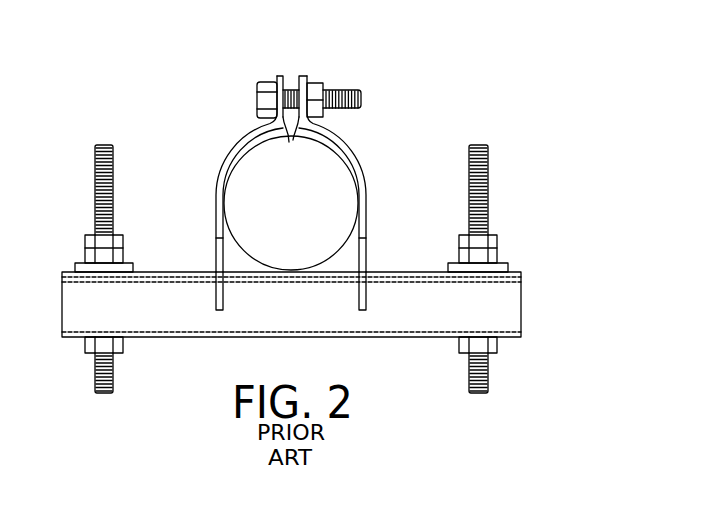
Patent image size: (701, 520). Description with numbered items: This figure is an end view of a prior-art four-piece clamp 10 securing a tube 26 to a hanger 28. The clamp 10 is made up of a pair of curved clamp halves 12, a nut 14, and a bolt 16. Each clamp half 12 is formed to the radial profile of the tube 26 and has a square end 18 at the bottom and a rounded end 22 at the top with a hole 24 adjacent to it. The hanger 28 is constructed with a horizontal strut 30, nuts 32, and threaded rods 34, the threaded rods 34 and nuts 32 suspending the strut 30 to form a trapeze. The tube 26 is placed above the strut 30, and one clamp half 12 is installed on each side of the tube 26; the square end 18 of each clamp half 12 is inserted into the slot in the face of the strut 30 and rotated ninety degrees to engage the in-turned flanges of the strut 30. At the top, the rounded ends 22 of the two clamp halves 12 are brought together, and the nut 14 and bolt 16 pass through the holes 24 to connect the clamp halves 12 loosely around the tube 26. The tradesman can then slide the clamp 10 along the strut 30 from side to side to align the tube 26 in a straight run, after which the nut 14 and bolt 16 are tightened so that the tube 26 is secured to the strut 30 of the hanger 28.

The four-piece clamp 10 is at (372, 72).
The clamp half 12 is at (240, 149).
The nut 14 is at (319, 112).
The bolt 16 is at (266, 84).
The square end 18 is at (213, 300).
The rounded end 22 is at (280, 76).
The hole 24 is at (289, 142).
The tube 26 is at (339, 259).
The hanger 28 is at (149, 130).
The strut 30 is at (77, 310).
The nut 32 is at (85, 243).
The threaded rod 34 is at (113, 190).